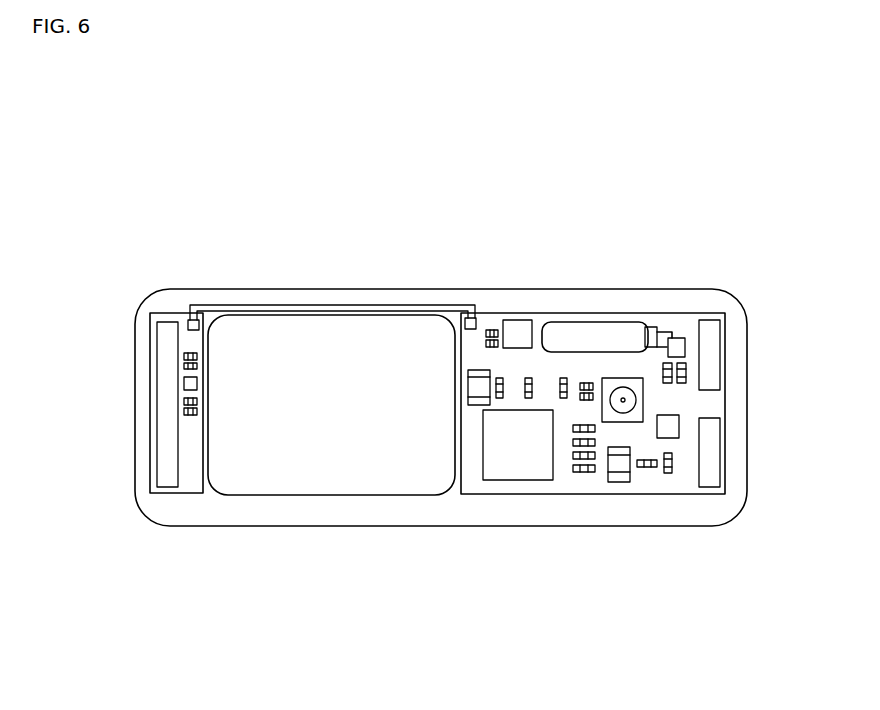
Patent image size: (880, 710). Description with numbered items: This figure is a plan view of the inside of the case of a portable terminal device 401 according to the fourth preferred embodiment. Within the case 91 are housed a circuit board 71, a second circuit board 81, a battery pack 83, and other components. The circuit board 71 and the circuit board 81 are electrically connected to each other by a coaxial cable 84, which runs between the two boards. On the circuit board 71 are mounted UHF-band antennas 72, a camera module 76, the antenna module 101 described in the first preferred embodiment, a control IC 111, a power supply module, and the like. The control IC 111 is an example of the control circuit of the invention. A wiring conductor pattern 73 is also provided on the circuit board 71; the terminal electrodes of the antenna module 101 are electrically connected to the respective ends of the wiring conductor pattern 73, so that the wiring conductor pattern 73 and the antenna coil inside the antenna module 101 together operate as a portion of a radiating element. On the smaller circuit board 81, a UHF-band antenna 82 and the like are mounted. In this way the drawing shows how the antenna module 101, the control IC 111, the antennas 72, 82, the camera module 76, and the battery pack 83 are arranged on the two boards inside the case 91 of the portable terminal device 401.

The portable terminal device 401 is at (745, 161).
The case 91 is at (735, 300).
The circuit board 71 is at (566, 483).
The UHF-band antennas 72 is at (715, 363).
The wiring conductor pattern 73 is at (600, 322).
The camera module 76 is at (637, 400).
The circuit board 81 is at (192, 483).
The UHF-band antenna 82 is at (163, 405).
The battery pack 83 is at (338, 487).
The coaxial cable 84 is at (352, 305).
The antenna module 101 is at (651, 327).
The control IC 111 is at (685, 345).